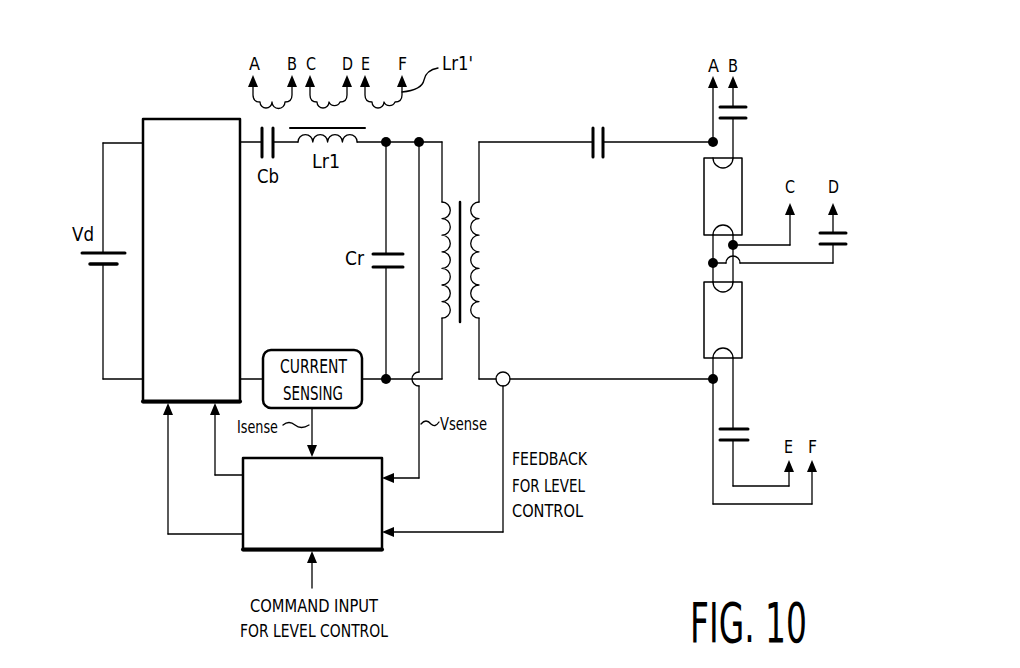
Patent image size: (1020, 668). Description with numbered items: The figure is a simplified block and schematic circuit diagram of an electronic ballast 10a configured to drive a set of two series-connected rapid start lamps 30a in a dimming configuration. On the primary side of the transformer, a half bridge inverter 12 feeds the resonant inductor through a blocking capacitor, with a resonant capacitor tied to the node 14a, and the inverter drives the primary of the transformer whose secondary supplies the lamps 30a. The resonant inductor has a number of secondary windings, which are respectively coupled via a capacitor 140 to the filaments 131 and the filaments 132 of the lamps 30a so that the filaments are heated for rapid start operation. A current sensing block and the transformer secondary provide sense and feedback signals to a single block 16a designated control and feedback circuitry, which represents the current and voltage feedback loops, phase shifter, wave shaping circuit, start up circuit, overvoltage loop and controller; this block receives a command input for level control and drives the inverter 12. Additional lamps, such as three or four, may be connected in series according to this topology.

The half bridge inverter 12 is at (162, 130).
The resonant node / output node 14a is at (401, 125).
The ballast 10a is at (478, 113).
The control and feedback circuitry 16a is at (383, 551).
The rapid start lamp 30a is at (673, 262).
The filament 131 is at (707, 167).
The filament 132 is at (706, 229).
The capacitor 140 is at (748, 113).